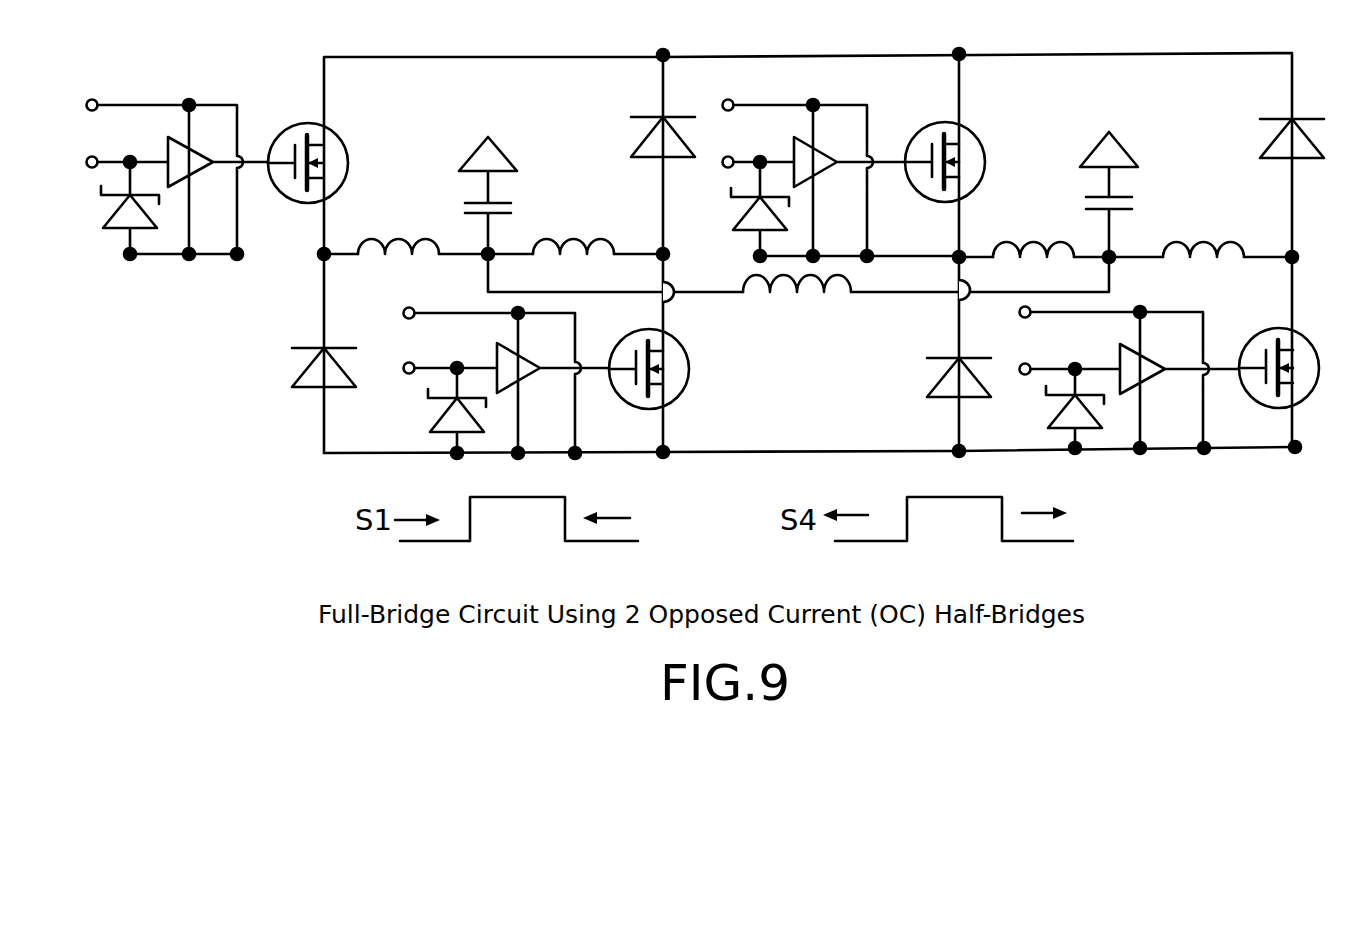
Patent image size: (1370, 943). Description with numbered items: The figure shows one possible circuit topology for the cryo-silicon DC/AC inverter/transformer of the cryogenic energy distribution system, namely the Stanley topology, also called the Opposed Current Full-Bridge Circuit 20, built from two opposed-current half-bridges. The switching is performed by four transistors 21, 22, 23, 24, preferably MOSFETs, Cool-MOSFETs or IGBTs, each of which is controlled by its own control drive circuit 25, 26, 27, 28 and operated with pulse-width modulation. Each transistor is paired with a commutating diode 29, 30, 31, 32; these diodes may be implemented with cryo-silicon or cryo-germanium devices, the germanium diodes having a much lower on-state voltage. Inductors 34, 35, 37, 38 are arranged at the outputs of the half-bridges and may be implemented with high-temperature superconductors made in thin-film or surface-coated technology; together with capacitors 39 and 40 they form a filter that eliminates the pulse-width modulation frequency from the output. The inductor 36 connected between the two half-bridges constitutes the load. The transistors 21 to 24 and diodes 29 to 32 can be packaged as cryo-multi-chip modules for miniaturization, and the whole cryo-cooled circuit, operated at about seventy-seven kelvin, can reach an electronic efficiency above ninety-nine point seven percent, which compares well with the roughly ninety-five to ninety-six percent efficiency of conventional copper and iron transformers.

The full-bridge circuit 20 is at (517, 67).
The transistor 21 is at (333, 158).
The transistor 22 is at (672, 378).
The transistor 23 is at (969, 158).
The transistor 24 is at (1302, 377).
The control drive circuit 25 is at (174, 165).
The control drive circuit 26 is at (503, 403).
The control drive circuit 27 is at (840, 167).
The control drive circuit 28 is at (1123, 380).
The commutating diode 29 is at (303, 385).
The commutating diode 30 is at (642, 128).
The commutating diode 31 is at (934, 394).
The commutating diode 32 is at (1286, 139).
The inductor 34 is at (398, 252).
The inductor 35 is at (573, 252).
The inductor 36 is at (798, 303).
The inductor 37 is at (1033, 254).
The inductor 38 is at (1203, 253).
The capacitor 39 is at (507, 195).
The capacitor 40 is at (1125, 194).